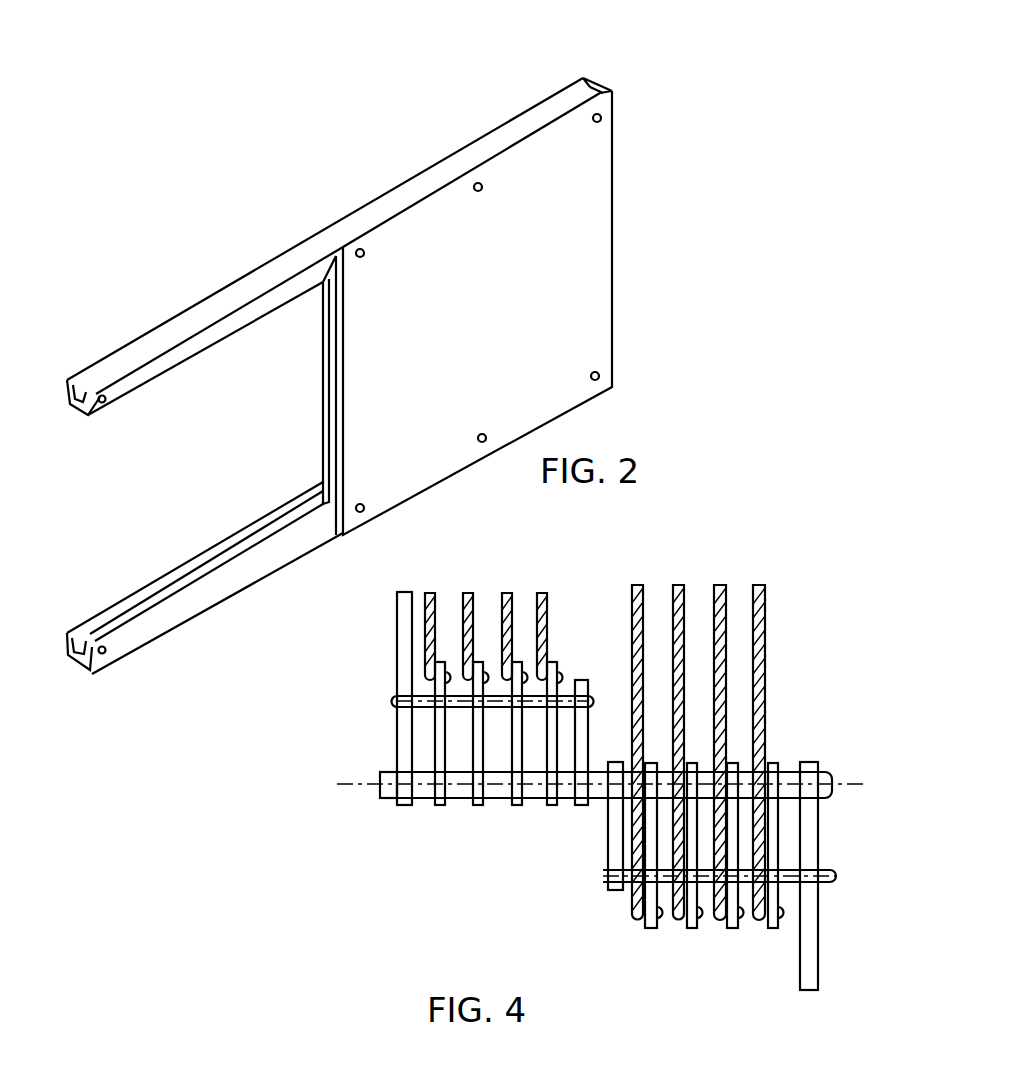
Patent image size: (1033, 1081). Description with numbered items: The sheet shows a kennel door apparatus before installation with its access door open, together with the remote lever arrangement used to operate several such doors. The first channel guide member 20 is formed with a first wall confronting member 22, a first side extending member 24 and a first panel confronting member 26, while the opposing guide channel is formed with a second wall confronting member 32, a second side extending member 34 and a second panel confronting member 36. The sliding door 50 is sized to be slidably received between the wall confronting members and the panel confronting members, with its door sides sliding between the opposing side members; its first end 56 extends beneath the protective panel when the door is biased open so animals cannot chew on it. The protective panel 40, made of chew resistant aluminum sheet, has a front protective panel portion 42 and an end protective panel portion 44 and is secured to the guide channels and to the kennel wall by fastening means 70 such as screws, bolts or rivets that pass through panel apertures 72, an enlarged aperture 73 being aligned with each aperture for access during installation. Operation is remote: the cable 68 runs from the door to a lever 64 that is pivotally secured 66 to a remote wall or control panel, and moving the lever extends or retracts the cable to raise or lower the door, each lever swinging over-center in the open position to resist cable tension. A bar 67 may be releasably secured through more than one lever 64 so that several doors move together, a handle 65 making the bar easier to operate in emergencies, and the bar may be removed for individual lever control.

In FIG. 2, the first channel guide member 20 is at (250, 247).
In FIG. 2, the first wall confronting member 22 is at (67, 392).
In FIG. 2, the first side extending member 24 is at (188, 322).
In FIG. 2, the first panel confronting member 26 is at (187, 352).
In FIG. 2, the second wall confronting member 32 is at (63, 665).
In FIG. 2, the second side extending member 34 is at (70, 653).
In FIG. 2, the second panel confronting member 36 is at (90, 663).
In FIG. 2, the protective panel 40 is at (543, 182).
In FIG. 2, the front protective panel portion 42 is at (575, 262).
In FIG. 2, the end protective panel portion 44 is at (598, 82).
In FIG. 2, the sliding door 50 is at (276, 362).
In FIG. 2, the first end of the sliding door 56 is at (323, 440).
In FIG. 2, the fastening means 70 is at (545, 291).
In FIG. 2, the panel apertures 72 is at (475, 182).
In FIG. 2, the enlarged aperture 73 is at (103, 393).
In FIG. 4, the remote lever 64 is at (543, 750).
In FIG. 4, the handle 65 is at (397, 635).
In FIG. 4, the pivotal securement 66 is at (380, 790).
In FIG. 4, the bar 67 is at (578, 682).
In FIG. 4, the cable 68 is at (543, 592).